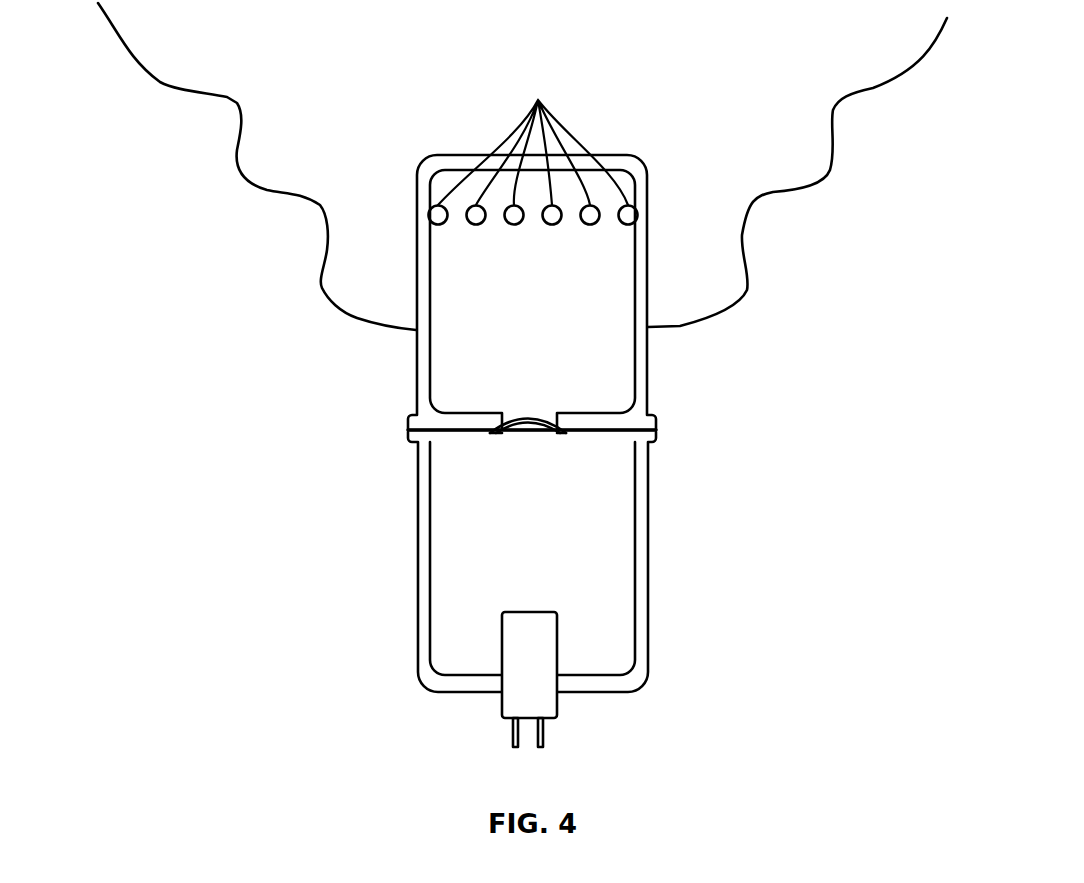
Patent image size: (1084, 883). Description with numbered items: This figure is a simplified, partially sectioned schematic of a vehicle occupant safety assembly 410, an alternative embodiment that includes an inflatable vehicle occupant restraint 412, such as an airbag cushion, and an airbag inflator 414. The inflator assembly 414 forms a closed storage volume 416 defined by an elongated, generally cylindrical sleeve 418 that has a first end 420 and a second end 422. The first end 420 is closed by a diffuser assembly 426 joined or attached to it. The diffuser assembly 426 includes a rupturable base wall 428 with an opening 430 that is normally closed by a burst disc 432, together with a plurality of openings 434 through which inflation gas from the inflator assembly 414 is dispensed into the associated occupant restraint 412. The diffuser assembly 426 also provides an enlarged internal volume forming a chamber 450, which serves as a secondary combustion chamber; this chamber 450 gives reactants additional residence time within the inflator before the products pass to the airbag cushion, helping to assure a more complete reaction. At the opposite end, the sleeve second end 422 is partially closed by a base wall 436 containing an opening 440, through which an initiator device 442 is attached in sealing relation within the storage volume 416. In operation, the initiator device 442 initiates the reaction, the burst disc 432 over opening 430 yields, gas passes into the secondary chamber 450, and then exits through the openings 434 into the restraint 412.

The vehicle occupant safety assembly 410 is at (257, 430).
The inflatable vehicle occupant restraint 412 is at (237, 103).
The airbag inflator 414 is at (413, 570).
The storage volume 416 is at (564, 570).
The sleeve 418 is at (640, 625).
The first end 420 is at (655, 452).
The second end 422 is at (423, 698).
The diffuser assembly 426 is at (650, 170).
The rupturable base wall 428 is at (598, 421).
The opening 430 is at (492, 421).
The burst disc 432 is at (522, 440).
The openings 434 is at (533, 145).
The base wall 436 is at (596, 681).
The opening 440 is at (497, 688).
The initiator device 442 is at (534, 633).
The chamber 450 is at (533, 307).